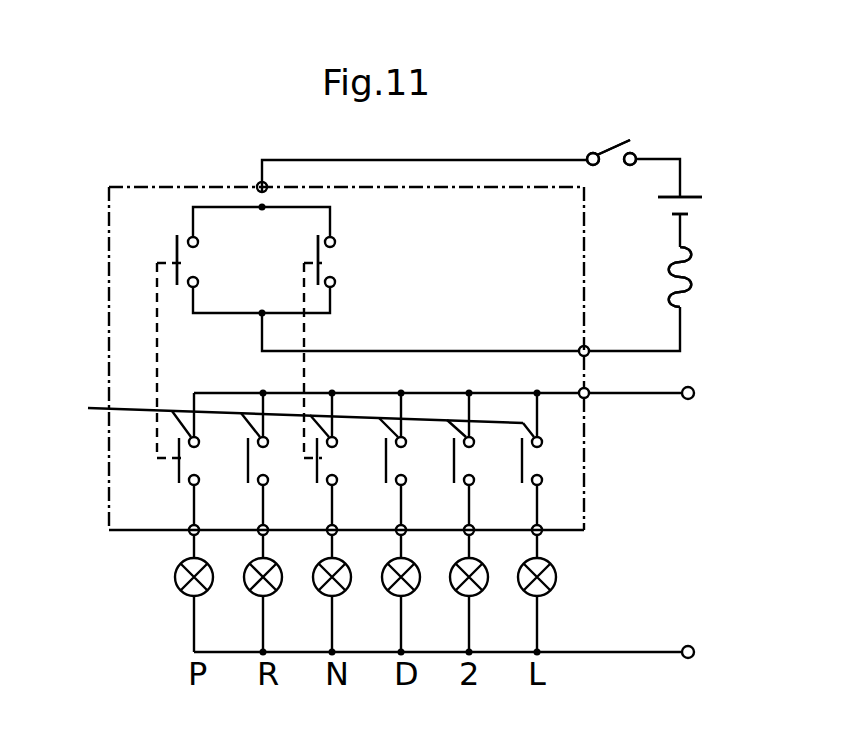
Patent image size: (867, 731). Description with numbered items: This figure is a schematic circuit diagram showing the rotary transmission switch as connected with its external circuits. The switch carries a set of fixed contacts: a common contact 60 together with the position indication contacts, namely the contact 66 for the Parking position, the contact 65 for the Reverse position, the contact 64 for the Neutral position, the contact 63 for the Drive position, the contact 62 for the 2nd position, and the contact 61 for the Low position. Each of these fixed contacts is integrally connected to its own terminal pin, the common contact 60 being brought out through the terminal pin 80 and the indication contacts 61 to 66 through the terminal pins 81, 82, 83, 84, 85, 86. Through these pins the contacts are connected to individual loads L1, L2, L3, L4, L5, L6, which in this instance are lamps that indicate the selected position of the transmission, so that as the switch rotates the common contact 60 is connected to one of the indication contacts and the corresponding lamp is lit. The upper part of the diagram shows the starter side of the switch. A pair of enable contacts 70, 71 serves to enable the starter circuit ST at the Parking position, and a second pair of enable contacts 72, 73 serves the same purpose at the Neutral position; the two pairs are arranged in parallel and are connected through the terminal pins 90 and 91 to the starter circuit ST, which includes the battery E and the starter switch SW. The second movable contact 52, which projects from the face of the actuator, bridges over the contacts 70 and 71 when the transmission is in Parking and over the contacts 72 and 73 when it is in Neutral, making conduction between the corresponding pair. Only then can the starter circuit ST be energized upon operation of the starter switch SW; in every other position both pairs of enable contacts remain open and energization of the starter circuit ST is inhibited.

The second movable contact 52 is at (318, 255).
The common contact 60 is at (284, 412).
The contact for indication of Low position 61 is at (541, 484).
The contact for indication of 2nd position 62 is at (473, 484).
The contact for indication of Drive position 63 is at (405, 484).
The contact for indication of Neutral position 64 is at (336, 484).
The contact for indication of Reverse position 65 is at (267, 484).
The contact for indication of Parking position 66 is at (198, 484).
The enable contact 70 is at (230, 289).
The enable contact 71 is at (198, 240).
The enable contact 72 is at (335, 283).
The enable contact 73 is at (335, 240).
The terminal pin 80 is at (589, 398).
The terminal pin 81 is at (541, 533).
The terminal pin 82 is at (473, 533).
The terminal pin 83 is at (405, 533).
The terminal pin 84 is at (336, 533).
The terminal pin 85 is at (267, 533).
The terminal pin 86 is at (190, 533).
The terminal pin 90 is at (589, 346).
The terminal pin 91 is at (257, 183).
The starter switch SW is at (613, 140).
The battery E is at (690, 207).
The starter circuit ST is at (692, 270).
The load L1 is at (550, 587).
The load L2 is at (482, 590).
The load L3 is at (414, 590).
The load L4 is at (345, 590).
The load L5 is at (276, 590).
The load L6 is at (181, 590).